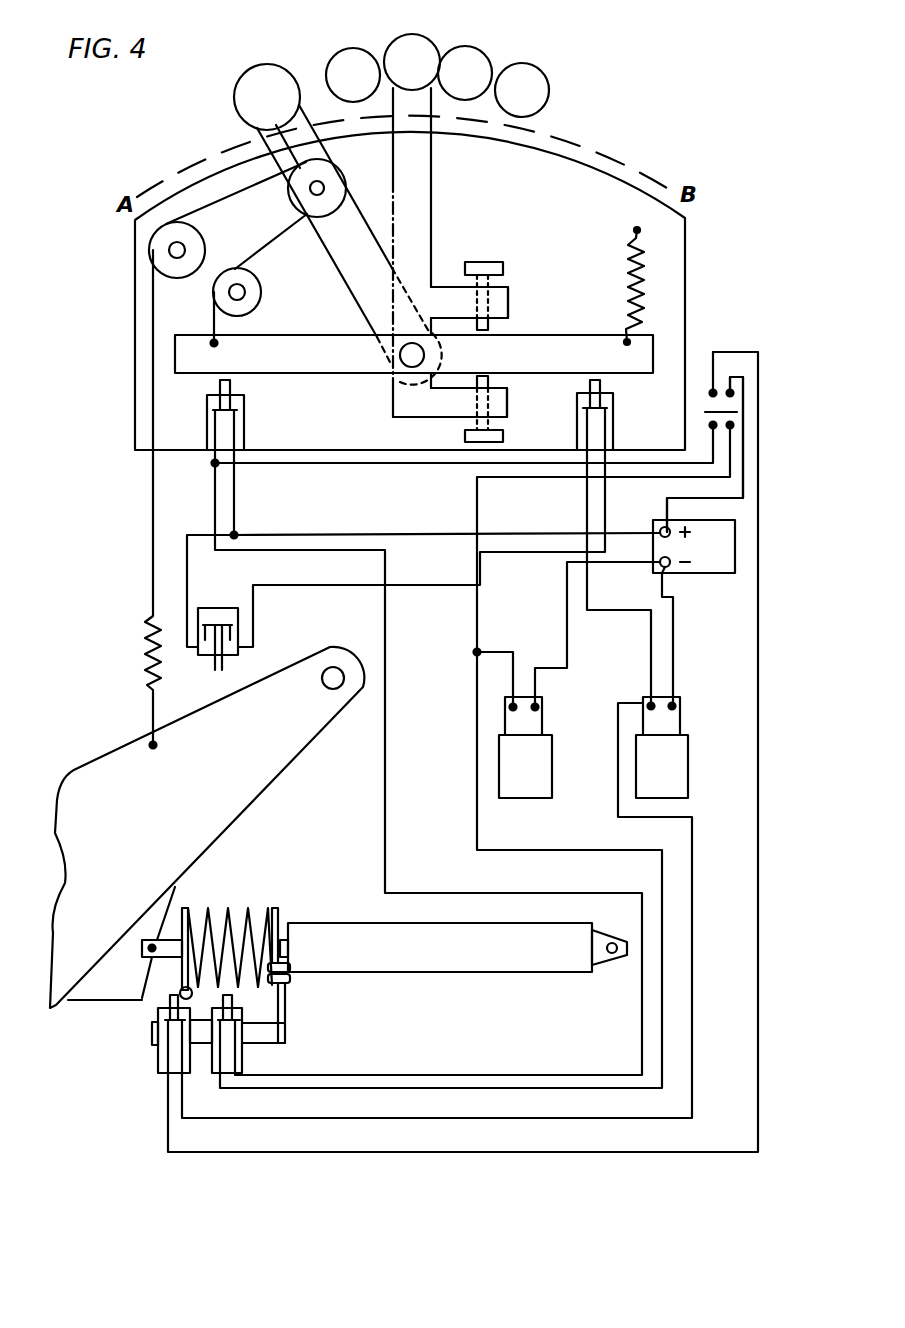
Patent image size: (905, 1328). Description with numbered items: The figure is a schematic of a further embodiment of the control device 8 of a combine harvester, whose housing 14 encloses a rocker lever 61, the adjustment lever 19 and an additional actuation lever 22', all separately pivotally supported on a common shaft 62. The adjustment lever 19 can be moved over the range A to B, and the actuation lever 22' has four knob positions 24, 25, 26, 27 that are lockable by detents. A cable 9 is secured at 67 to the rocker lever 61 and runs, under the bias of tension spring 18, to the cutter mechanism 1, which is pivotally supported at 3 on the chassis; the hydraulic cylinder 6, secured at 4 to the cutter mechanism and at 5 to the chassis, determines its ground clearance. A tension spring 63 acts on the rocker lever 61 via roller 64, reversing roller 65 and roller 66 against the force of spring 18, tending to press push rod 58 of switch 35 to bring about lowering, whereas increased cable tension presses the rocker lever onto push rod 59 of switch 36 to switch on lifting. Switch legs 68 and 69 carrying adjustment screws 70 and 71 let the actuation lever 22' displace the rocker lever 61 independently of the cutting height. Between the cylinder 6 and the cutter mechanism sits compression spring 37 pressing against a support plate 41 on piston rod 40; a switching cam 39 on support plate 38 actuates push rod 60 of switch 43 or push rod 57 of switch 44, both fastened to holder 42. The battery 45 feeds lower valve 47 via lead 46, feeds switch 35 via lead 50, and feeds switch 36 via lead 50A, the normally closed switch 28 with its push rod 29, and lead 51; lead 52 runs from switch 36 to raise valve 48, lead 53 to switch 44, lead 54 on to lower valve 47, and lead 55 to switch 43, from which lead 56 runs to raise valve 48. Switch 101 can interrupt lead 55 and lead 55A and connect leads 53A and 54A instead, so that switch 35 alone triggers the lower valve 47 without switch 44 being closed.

The cutter mechanism 1 is at (110, 750).
The pivot 3 is at (336, 668).
The securing point 4 is at (145, 957).
The securing point 5 is at (614, 955).
The hydraulic cylinder 6 is at (350, 923).
The control device 8 is at (694, 256).
The cable 9 is at (152, 515).
The housing 14 is at (690, 212).
The tension spring 18 is at (150, 628).
The adjustment lever 19 is at (258, 137).
The additional actuation lever 22' is at (450, 252).
The position 24 is at (350, 52).
The position 25 is at (412, 36).
The position 26 is at (475, 58).
The position 27 is at (530, 72).
The electric switch 28 is at (222, 608).
The push rod 29 is at (212, 665).
The switch 35 is at (245, 434).
The switch 36 is at (614, 434).
The compression spring 37 is at (232, 906).
The support plate 38 is at (186, 906).
The switching cam 39 is at (182, 992).
The piston rod 40 is at (284, 940).
The support plate 41 is at (278, 908).
The holder 42 is at (290, 1003).
The electric switch 43 is at (158, 1062).
The electric switch 44 is at (243, 1060).
The battery 45 is at (706, 566).
The lead 46 is at (568, 641).
The lower valve 47 is at (553, 757).
The raise valve 48 is at (689, 758).
The lead 50 is at (236, 506).
The lead 50A is at (185, 535).
The lead 51 is at (606, 494).
The lead 52 is at (586, 494).
The lead 53 is at (213, 466).
The lead 53A is at (395, 462).
The lead 54 is at (605, 848).
The lead 54A is at (476, 494).
The lead 55 is at (757, 640).
The lead 55A is at (718, 495).
The lead 56 is at (692, 906).
The push rod 57 is at (233, 1002).
The push rod 58 is at (231, 386).
The push rod 59 is at (601, 386).
The push rod 60 is at (170, 1003).
The rocker lever 61 is at (550, 335).
The common shaft 62 is at (404, 362).
The tension spring 63 is at (637, 293).
The roller 64 is at (192, 244).
The reversing roller 65 is at (338, 175).
The roller 66 is at (257, 291).
The securing point 67 is at (212, 340).
The switch leg 68 is at (452, 280).
The switch leg 69 is at (445, 417).
The adjustment screw 70 is at (485, 262).
The adjustment screw 71 is at (503, 436).
The switch 101 is at (700, 390).